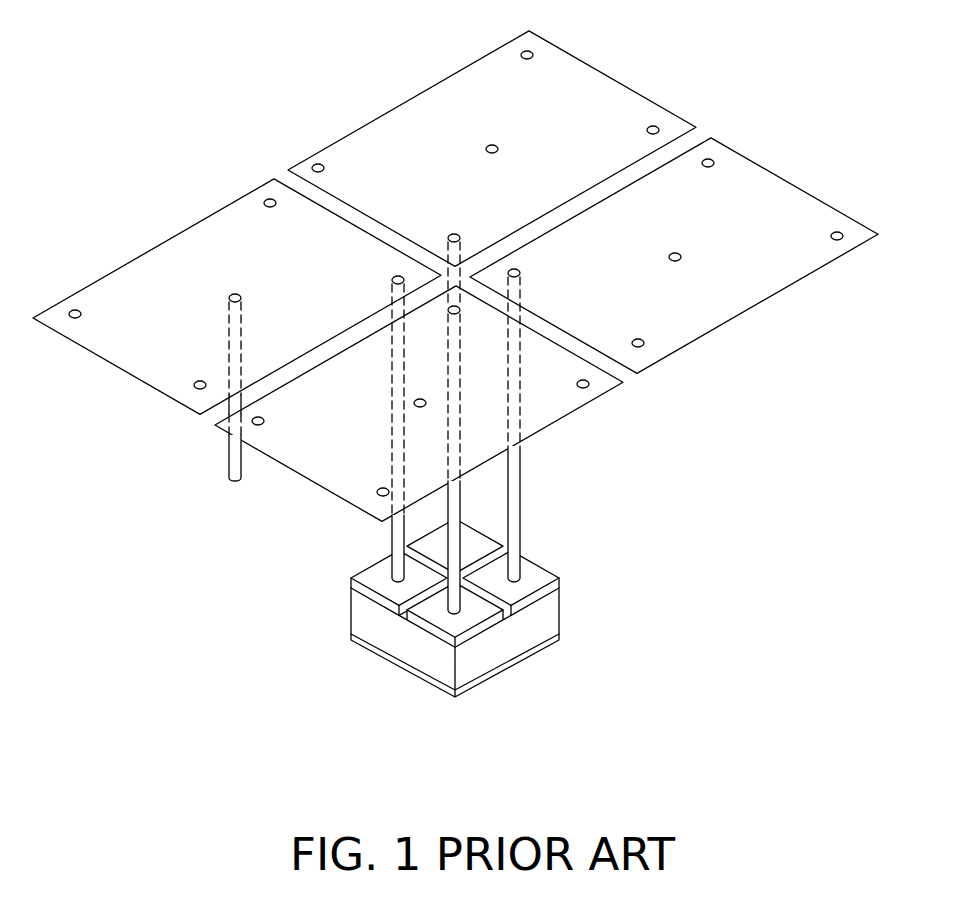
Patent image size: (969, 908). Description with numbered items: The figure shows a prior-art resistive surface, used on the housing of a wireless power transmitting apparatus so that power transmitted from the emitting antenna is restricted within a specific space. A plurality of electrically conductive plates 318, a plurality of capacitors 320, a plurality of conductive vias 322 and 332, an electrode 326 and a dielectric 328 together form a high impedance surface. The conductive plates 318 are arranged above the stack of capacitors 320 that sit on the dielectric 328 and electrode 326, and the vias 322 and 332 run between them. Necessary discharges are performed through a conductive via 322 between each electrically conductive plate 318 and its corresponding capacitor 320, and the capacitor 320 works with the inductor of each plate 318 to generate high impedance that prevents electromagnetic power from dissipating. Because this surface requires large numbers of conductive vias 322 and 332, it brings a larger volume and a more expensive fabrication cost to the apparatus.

The electrically conductive plate 318 is at (396, 125).
The capacitor 320 is at (482, 537).
The conductive via 322 is at (520, 499).
The electrode 326 is at (517, 662).
The dielectric 328 is at (558, 608).
The conductive via 332 is at (228, 462).